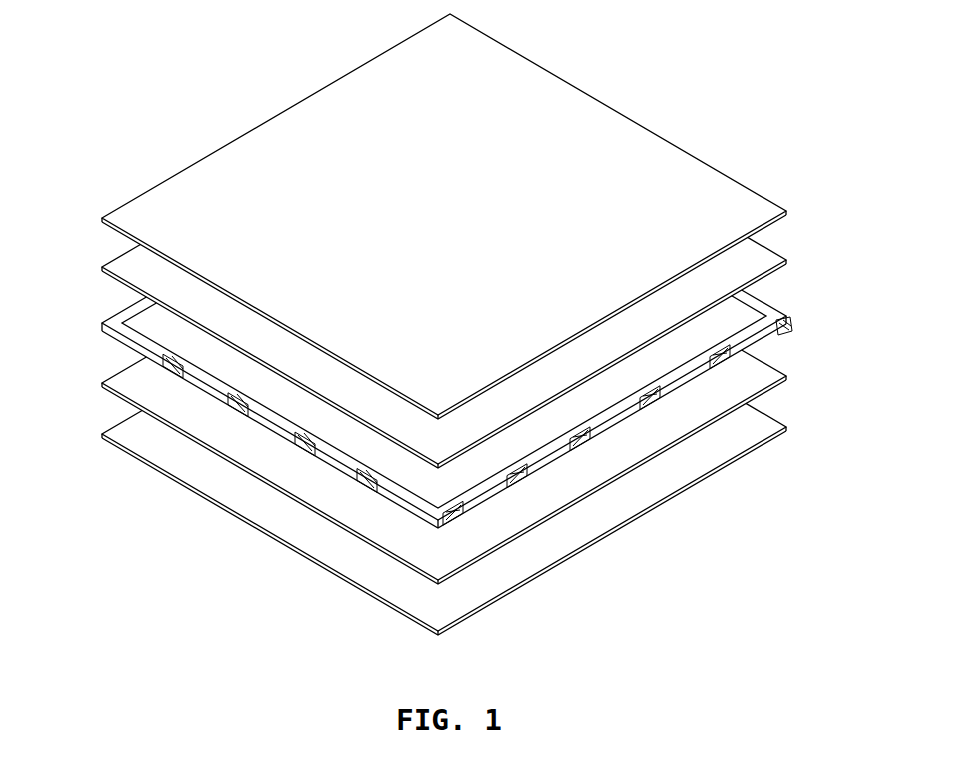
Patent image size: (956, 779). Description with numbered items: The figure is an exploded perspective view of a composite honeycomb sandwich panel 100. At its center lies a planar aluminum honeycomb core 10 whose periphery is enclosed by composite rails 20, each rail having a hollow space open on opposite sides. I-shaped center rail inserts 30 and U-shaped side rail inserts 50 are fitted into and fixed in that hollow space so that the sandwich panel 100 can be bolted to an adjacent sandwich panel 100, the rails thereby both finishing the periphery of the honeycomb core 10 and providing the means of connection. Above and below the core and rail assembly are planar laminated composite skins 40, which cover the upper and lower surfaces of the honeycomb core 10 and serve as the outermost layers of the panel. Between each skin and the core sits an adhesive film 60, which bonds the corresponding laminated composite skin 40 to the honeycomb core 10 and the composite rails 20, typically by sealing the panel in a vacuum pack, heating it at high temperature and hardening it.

The sandwich panel 100 is at (122, 44).
The honeycomb core 10 is at (749, 307).
The composite rail 20 is at (620, 422).
The I-shaped center rail insert 30 is at (728, 372).
The laminated composite skin 40 is at (266, 109).
The U-shaped side rail insert 50 is at (797, 337).
The adhesive film 60 is at (114, 251).